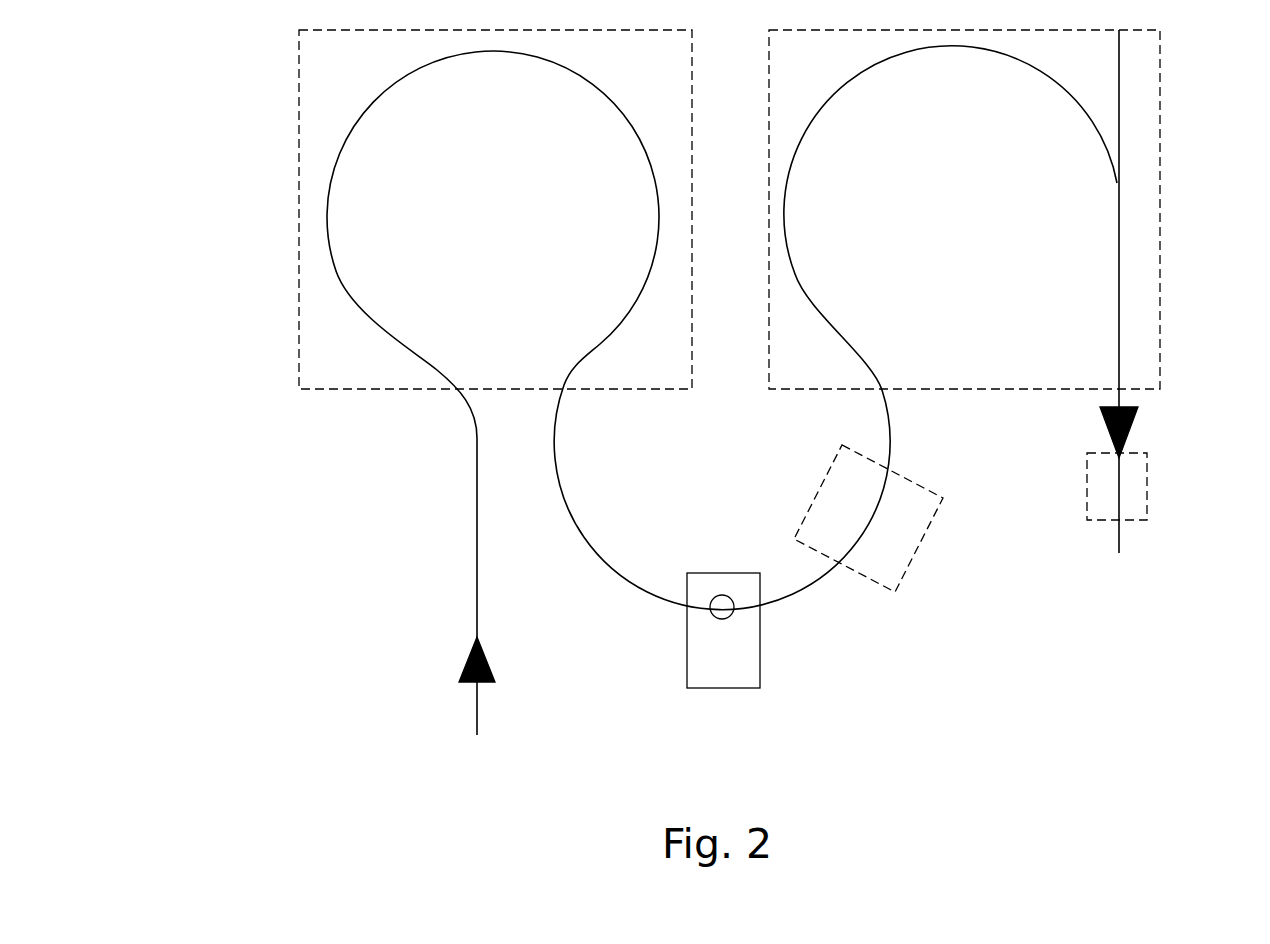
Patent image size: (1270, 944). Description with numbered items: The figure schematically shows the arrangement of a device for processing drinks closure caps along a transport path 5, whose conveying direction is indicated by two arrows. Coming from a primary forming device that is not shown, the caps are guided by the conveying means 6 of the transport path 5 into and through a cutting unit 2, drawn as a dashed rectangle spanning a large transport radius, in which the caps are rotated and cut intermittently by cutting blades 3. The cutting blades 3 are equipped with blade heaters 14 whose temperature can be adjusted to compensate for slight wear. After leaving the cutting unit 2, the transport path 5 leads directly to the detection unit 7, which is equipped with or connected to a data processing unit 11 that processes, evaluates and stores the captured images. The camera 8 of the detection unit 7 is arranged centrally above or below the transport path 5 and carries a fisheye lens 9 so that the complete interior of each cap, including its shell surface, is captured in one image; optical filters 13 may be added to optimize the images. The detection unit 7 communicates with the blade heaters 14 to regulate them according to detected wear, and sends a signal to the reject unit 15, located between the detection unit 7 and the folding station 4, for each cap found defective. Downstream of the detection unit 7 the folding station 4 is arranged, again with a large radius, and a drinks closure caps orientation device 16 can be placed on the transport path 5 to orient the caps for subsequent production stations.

The cutting unit 2 is at (414, 209).
The cutting blades 3 is at (414, 209).
The blade heaters 14 is at (299, 287).
The folding station 4 is at (1160, 270).
The transport path 5 is at (427, 586).
The conveying means 6 is at (476, 505).
The detection unit 7 is at (805, 679).
The data processing unit 11 is at (805, 679).
The optical filters 13 is at (760, 688).
The camera 8 is at (788, 644).
The fisheye lens 9 is at (737, 613).
The reject unit 15 is at (912, 560).
The drinks closure caps orientation device 16 is at (1147, 487).